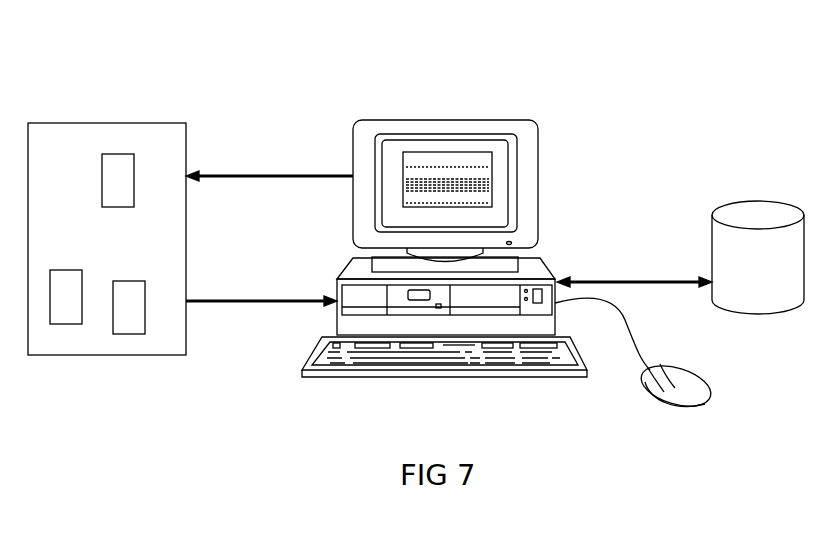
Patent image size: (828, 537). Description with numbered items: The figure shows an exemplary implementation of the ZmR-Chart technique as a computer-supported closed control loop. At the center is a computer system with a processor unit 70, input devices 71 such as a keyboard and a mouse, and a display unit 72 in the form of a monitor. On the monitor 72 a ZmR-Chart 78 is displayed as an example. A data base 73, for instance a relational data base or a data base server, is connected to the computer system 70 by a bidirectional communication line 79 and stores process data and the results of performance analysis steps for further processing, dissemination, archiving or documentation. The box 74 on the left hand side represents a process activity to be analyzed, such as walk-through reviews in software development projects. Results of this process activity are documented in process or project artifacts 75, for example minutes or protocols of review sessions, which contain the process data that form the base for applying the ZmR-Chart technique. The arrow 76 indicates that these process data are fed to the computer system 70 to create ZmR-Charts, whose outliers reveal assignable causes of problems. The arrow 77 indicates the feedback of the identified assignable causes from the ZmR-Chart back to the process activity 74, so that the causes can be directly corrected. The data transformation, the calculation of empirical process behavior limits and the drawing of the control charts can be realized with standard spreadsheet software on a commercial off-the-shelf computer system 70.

The processor unit 70 is at (546, 268).
The input devices 71 is at (647, 393).
The display unit 72 is at (445, 167).
The data base 73 is at (745, 200).
The process activity 74 is at (186, 123).
The process or project artifacts 75 is at (122, 154).
The arrow 76 is at (261, 307).
The arrow 77 is at (280, 175).
The ZmR-Chart 78 is at (480, 150).
The bidirectional communication line 79 is at (657, 278).